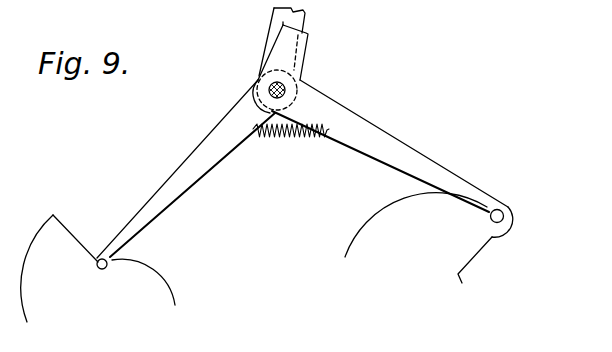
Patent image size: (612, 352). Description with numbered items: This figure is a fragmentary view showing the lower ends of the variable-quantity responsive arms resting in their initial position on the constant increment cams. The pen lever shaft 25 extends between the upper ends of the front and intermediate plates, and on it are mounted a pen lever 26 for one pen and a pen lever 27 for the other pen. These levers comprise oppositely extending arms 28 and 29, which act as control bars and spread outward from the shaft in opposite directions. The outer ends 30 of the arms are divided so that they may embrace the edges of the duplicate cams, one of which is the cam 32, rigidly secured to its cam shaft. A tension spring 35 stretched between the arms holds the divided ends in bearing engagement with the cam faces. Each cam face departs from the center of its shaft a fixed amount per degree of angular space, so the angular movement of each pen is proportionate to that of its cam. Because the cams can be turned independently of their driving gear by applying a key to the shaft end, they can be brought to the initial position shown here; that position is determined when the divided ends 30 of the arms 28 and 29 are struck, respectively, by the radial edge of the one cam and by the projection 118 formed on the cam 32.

The pen lever shaft 25 is at (285, 88).
The pen lever 26 is at (273, 32).
The pen lever 27 is at (275, 60).
The arm 28 is at (196, 157).
The arm 29 is at (385, 142).
The outer ends 30 is at (97, 262).
The cam 32 is at (390, 213).
The tension spring 35 is at (283, 133).
The projection 118 is at (510, 219).